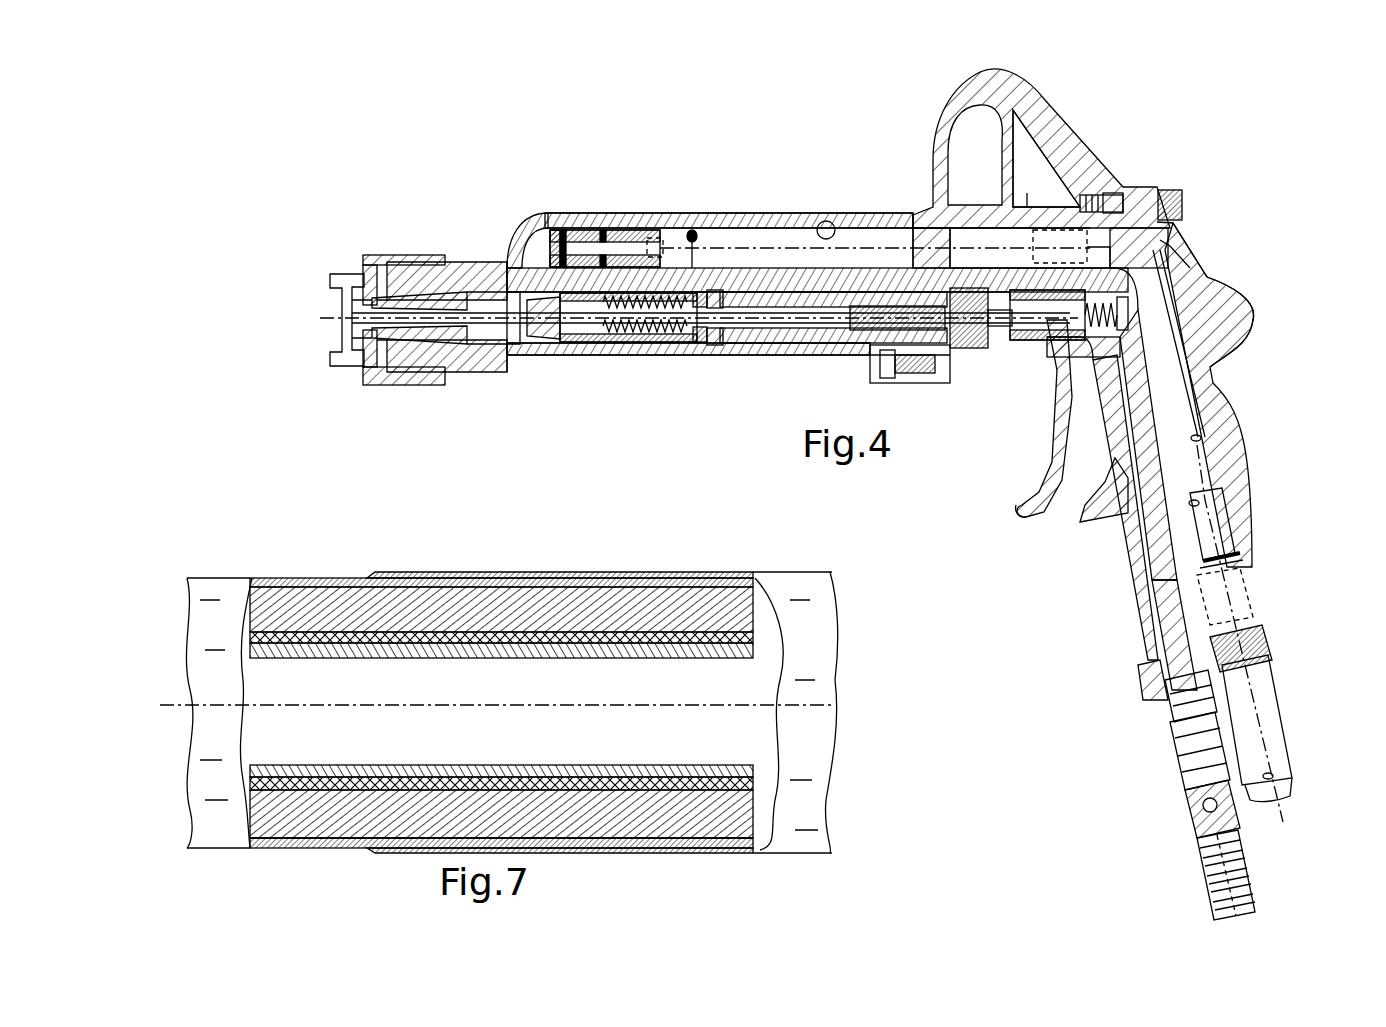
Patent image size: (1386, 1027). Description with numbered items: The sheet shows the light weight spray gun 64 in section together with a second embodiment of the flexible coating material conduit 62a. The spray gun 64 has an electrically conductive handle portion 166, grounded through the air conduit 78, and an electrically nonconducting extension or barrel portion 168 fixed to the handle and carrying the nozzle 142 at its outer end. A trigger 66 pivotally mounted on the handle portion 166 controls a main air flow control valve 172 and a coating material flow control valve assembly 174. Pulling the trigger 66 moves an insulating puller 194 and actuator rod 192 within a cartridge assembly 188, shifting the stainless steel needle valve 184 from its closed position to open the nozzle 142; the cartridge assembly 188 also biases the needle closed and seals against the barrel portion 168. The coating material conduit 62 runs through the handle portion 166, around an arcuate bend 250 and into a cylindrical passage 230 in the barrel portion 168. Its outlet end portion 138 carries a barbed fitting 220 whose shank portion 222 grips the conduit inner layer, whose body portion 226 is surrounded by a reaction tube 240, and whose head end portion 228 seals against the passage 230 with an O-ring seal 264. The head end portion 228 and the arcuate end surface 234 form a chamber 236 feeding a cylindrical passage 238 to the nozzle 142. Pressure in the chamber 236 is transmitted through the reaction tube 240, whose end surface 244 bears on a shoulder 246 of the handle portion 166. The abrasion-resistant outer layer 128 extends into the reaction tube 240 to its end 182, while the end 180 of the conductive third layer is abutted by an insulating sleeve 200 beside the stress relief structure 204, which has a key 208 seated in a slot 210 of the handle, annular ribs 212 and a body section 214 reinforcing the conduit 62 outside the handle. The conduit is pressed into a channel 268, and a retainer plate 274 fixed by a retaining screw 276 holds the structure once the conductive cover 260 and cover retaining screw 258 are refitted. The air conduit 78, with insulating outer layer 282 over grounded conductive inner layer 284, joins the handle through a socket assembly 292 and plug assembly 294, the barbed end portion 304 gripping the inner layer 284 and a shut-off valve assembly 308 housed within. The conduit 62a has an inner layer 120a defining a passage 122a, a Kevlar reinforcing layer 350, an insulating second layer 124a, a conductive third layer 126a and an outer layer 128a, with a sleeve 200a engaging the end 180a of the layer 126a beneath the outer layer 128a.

In FIG. 4, the spray gun 64 is at (1203, 147).
In FIG. 4, the nozzle 142 is at (382, 245).
In FIG. 4, the chamber 236 is at (500, 262).
In FIG. 4, the cylindrical passage 238 is at (493, 273).
In FIG. 4, the arcuate end surface 234 is at (535, 232).
In FIG. 4, the O-ring seal 264 is at (566, 232).
In FIG. 4, the head end portion 228 is at (574, 232).
In FIG. 4, the barbed fitting 220 is at (585, 227).
In FIG. 4, the body portion 226 is at (604, 232).
In FIG. 4, the shank portion 222 is at (626, 240).
In FIG. 4, the reaction tube 240 is at (712, 233).
In FIG. 4, the end portion 138 is at (705, 233).
In FIG. 4, the extension or barrel portion 168 is at (808, 210).
In FIG. 4, the passage 230 is at (828, 220).
In FIG. 4, the end of outer layer 182 is at (1027, 193).
In FIG. 4, the cover retaining screw 258 is at (1166, 190).
In FIG. 4, the shoulder 246 is at (1177, 231).
In FIG. 4, the end surface 244 is at (1180, 258).
In FIG. 4, the arcuate bend 250 is at (1127, 260).
In FIG. 4, the outer layer 128 is at (1157, 297).
In FIG. 4, the handle portion 166 is at (1218, 368).
In FIG. 4, the coating material conduit 62 is at (1200, 398).
In FIG. 4, the cover 260 is at (1233, 463).
In FIG. 4, the main air flow control valve 172 is at (1048, 435).
In FIG. 4, the puller 194 is at (958, 335).
In FIG. 4, the trigger 66 is at (1018, 511).
In FIG. 4, the channel 268 is at (1140, 540).
In FIG. 4, the key 208 is at (1190, 605).
In FIG. 4, the slot 210 is at (1207, 640).
In FIG. 4, the sleeve 200 is at (1247, 572).
In FIG. 4, the end of third layer 180 is at (1257, 587).
In FIG. 4, the stress relief structure 204 is at (1262, 616).
In FIG. 4, the annular ribs 212 is at (1273, 663).
In FIG. 4, the body section 214 is at (1253, 700).
In FIG. 4, the retainer plate 274 is at (1150, 713).
In FIG. 4, the plug assembly 294 is at (1167, 722).
In FIG. 4, the retaining screw 276 is at (1249, 648).
In FIG. 4, the socket assembly 292 is at (1183, 807).
In FIG. 4, the outer layer of air conduit 282 is at (1243, 863).
In FIG. 4, the shut-off valve assembly 308 is at (1197, 820).
In FIG. 4, the air conduit 78 is at (1262, 883).
In FIG. 4, the barbed end portion 304 is at (1220, 877).
In FIG. 4, the inner layer of air conduit 284 is at (1253, 907).
In FIG. 4, the coating material flow control valve assembly 174 is at (487, 345).
In FIG. 4, the needle valve 184 is at (497, 328).
In FIG. 4, the cartridge assembly 188 is at (735, 350).
In FIG. 4, the actuator rod 192 is at (760, 320).
In FIG. 7, the outer layer 128a is at (295, 577).
In FIG. 7, the second layer 124a is at (258, 606).
In FIG. 7, the inner layer 120a is at (250, 655).
In FIG. 7, the passage 122a is at (250, 740).
In FIG. 7, the coating material conduit 62a is at (392, 868).
In FIG. 7, the reinforcing layer 350 is at (390, 767).
In FIG. 7, the third layer 126a is at (643, 590).
In FIG. 7, the end of third layer 180a is at (620, 833).
In FIG. 7, the sleeve 200a is at (560, 852).